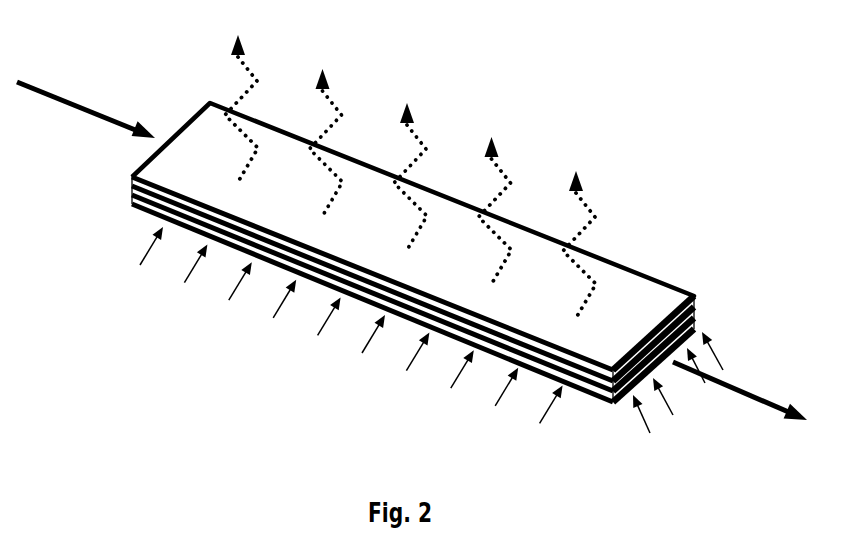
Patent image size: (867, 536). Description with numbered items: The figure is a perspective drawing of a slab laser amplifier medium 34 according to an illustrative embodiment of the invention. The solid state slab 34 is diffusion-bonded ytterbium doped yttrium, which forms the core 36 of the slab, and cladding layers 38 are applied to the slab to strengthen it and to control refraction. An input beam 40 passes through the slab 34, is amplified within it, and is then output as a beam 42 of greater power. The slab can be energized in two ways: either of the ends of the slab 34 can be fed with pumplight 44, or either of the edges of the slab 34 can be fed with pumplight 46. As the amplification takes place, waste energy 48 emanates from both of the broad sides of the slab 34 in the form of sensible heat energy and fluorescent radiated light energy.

The slab laser amplifier medium 34 is at (205, 357).
The core 36 is at (132, 191).
The cladding layers 38 is at (132, 179).
The input beam 40 is at (52, 96).
The output beam 42 is at (748, 388).
The pumplight 44 is at (718, 355).
The pumplight 46 is at (542, 430).
The waste energy 48 is at (232, 34).